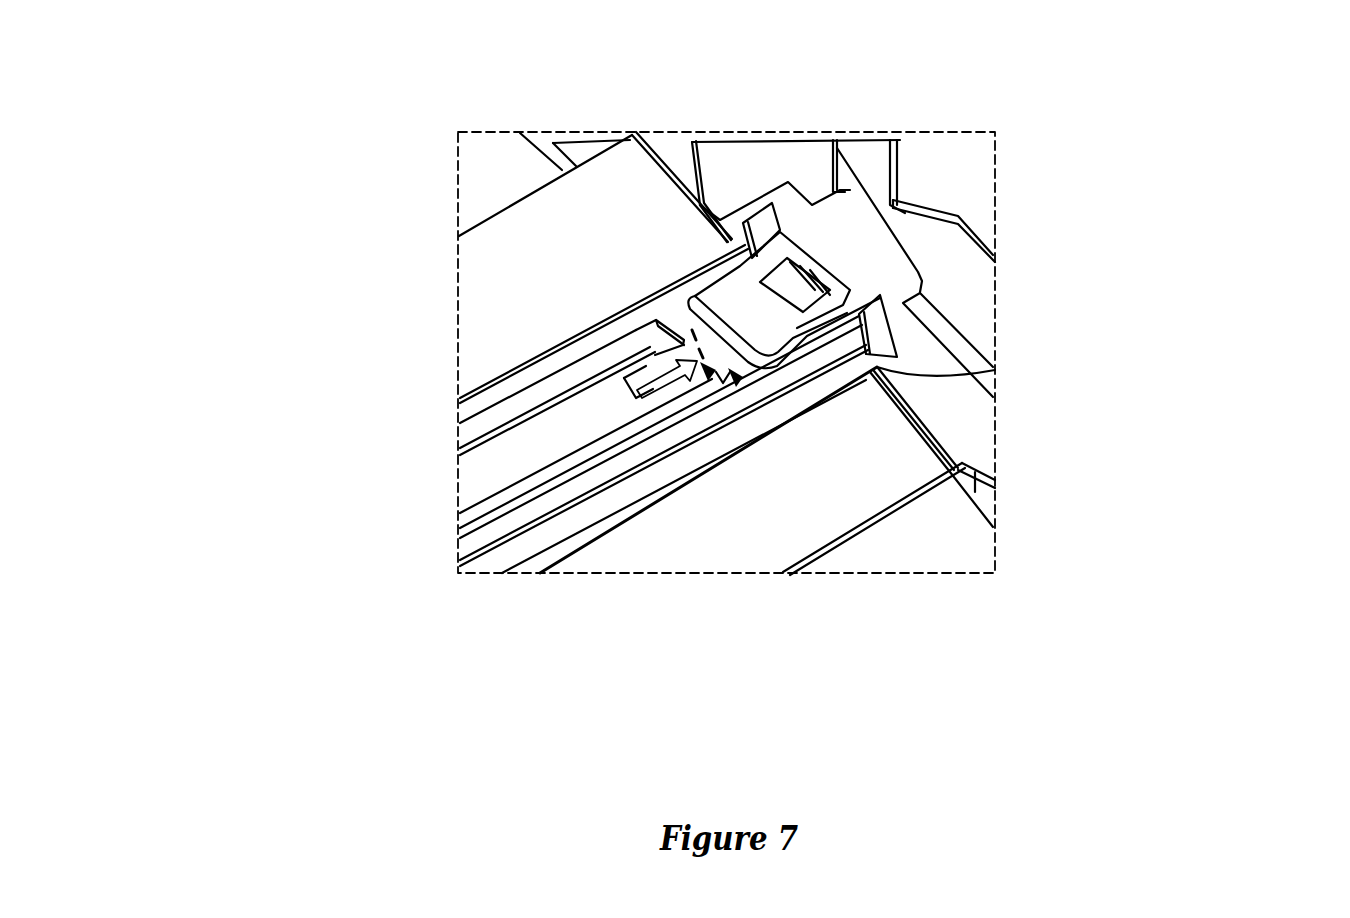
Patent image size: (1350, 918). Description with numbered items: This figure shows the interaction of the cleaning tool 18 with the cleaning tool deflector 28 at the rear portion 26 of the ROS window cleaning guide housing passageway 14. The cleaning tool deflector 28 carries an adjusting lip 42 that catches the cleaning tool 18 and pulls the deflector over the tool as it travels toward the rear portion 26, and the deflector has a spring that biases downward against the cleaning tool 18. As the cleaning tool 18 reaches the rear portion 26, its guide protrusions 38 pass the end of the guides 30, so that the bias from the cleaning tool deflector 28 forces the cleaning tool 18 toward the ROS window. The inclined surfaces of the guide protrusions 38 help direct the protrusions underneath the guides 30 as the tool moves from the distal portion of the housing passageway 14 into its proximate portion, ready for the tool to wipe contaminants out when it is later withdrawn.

The cleaning guide housing passageway 14 is at (626, 308).
The guide 30 is at (584, 381).
The cleaning tool 18 is at (524, 466).
The adjusting lip 42 is at (707, 306).
The cleaning tool deflector 28 is at (789, 298).
The rear portion 26 is at (863, 352).
The guide protrusions 38 is at (729, 366).